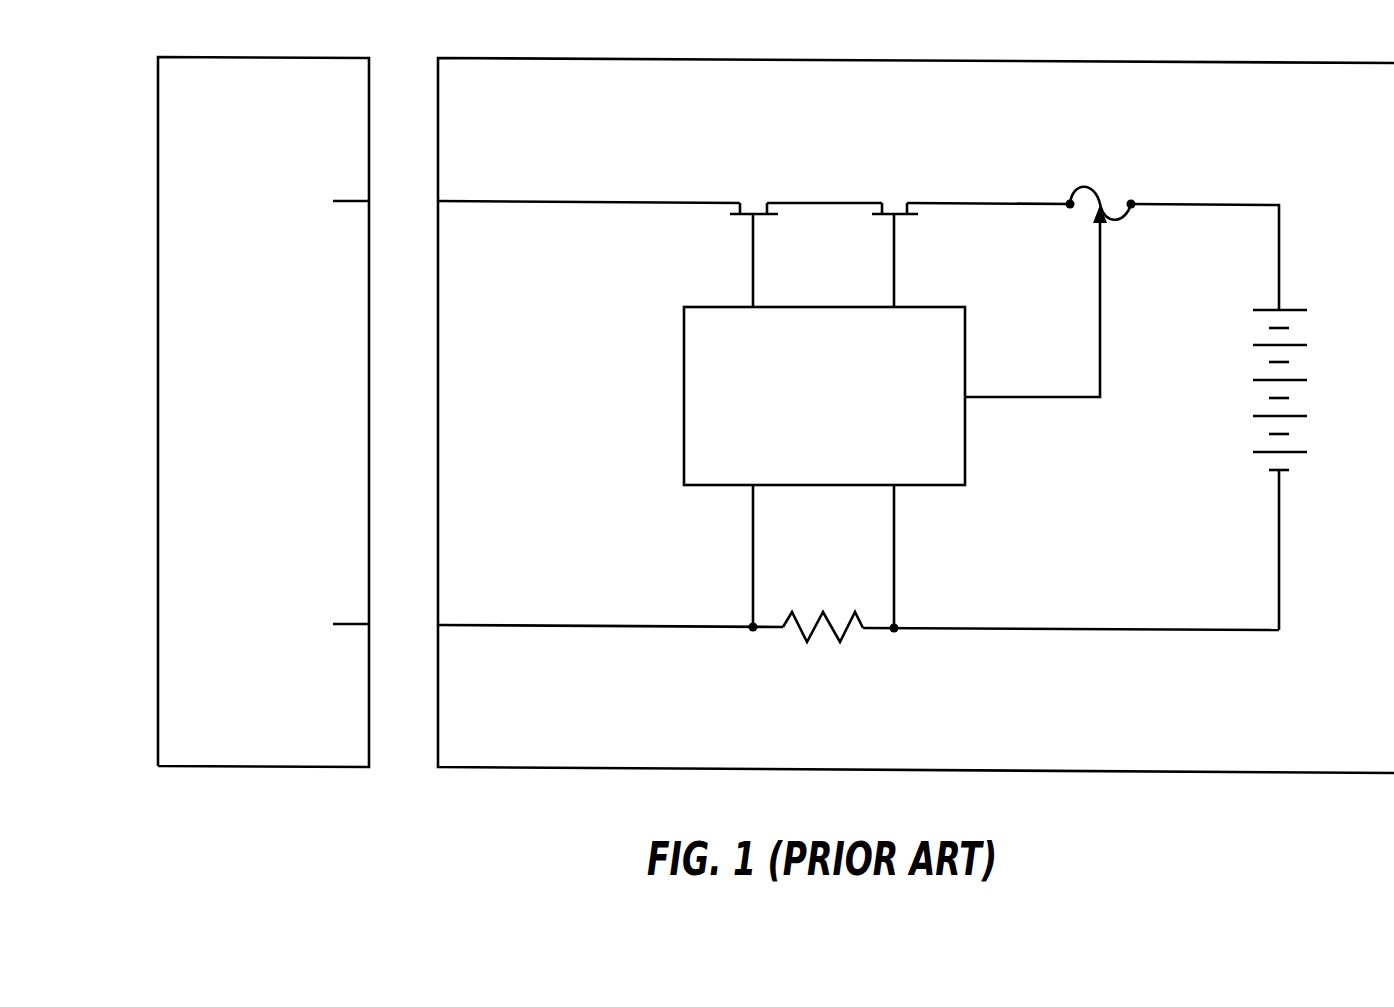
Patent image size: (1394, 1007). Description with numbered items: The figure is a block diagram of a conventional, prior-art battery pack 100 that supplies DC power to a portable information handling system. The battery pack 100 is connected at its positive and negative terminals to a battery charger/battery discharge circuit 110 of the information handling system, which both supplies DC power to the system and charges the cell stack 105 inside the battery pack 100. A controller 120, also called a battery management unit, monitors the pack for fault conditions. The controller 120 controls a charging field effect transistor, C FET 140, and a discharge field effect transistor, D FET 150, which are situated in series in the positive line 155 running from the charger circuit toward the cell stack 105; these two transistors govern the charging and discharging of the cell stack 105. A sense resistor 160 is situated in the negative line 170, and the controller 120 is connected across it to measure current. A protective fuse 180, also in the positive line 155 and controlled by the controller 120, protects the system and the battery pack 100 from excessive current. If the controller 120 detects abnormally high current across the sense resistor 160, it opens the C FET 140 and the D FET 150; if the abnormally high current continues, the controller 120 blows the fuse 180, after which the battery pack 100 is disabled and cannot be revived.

The battery pack 100 is at (1382, 764).
The cell stack 105 is at (1227, 325).
The battery charger/battery discharge circuit 110 is at (278, 465).
The controller 120 is at (840, 423).
The C FET 140 is at (755, 187).
The D FET 150 is at (896, 201).
The positive line 155 is at (1253, 200).
The sense resistor 160 is at (838, 641).
The negative line 170 is at (1195, 630).
The fuse 180 is at (1102, 194).